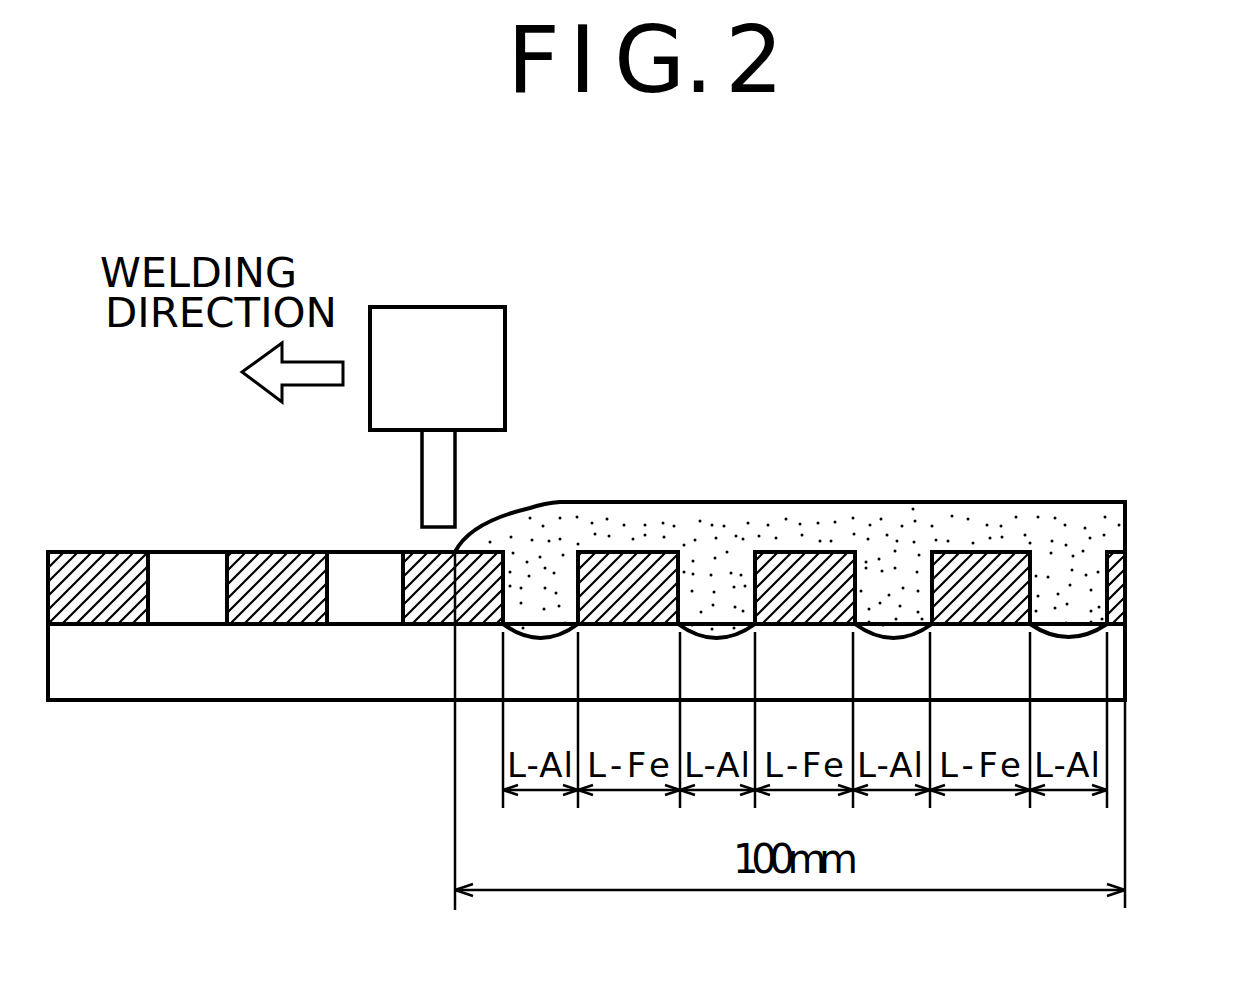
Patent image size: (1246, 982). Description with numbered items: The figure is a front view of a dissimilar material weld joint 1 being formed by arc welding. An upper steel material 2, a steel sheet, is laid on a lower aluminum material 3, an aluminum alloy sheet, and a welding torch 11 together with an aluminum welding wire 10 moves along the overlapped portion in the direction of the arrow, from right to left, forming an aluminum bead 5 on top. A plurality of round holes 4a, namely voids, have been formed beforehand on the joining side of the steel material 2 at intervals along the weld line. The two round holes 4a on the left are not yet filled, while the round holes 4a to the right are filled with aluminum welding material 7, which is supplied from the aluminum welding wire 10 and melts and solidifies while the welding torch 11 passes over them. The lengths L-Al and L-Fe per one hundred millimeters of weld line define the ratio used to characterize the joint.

The welded joint structure 1 is at (639, 511).
The steel material 2 is at (1127, 590).
The aluminum material 3 is at (1127, 672).
The round holes 4a is at (193, 597).
The aluminum bead 5 is at (574, 516).
The aluminum welding material 7 is at (1067, 575).
The aluminum welding wire 10 is at (421, 484).
The welding torch 11 is at (437, 307).